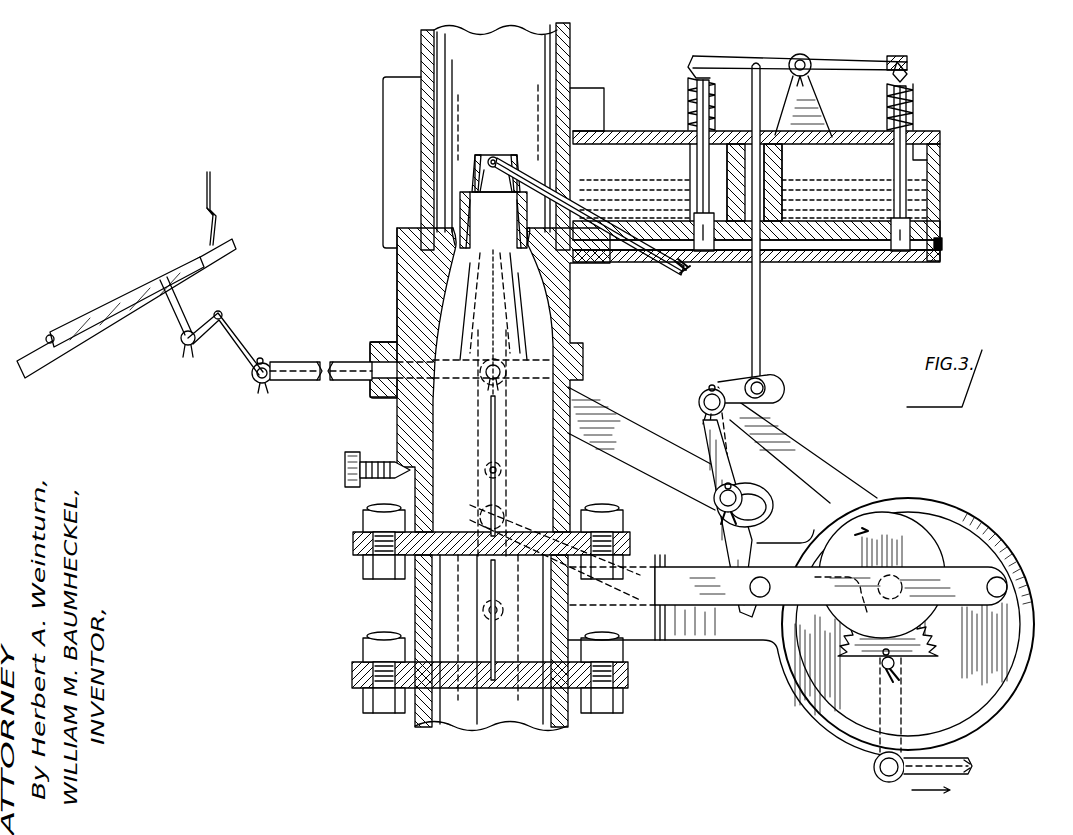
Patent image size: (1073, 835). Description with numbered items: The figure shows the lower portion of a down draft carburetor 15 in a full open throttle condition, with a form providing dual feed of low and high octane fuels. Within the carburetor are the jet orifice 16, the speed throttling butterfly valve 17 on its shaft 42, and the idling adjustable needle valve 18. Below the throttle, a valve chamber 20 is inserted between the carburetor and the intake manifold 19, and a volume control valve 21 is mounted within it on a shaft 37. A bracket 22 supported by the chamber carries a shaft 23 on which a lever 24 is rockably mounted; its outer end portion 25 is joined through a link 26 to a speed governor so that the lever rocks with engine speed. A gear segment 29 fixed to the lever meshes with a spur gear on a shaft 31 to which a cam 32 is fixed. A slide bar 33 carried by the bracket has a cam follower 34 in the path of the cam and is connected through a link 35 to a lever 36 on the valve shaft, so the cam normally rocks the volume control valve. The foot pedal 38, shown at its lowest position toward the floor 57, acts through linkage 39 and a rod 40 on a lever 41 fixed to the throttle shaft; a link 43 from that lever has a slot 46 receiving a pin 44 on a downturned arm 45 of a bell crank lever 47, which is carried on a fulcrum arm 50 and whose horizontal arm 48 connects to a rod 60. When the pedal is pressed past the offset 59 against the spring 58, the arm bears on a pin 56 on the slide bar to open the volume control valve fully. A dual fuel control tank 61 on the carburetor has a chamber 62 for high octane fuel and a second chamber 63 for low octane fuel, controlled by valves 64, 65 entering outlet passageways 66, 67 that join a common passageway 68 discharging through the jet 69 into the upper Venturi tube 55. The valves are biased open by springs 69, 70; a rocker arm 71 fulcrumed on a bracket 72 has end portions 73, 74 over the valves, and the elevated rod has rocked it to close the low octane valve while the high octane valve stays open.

The down draft carburetor 15 is at (575, 70).
The jet orifice 16 is at (494, 160).
The butterfly valve 17 is at (496, 490).
The adjustable needle valve 18 is at (344, 466).
The intake manifold 19 is at (470, 720).
The valve chamber 20 is at (446, 590).
The volume control valve 21 is at (498, 668).
The bracket 22 is at (680, 632).
The shaft 23 is at (898, 668).
The lever 24 is at (880, 750).
The outer end portion 25 is at (880, 778).
The link 26 is at (966, 752).
The gear segment 29 is at (920, 648).
The shaft 31 is at (880, 596).
The cam 32 is at (908, 609).
The slide bar 33 is at (690, 568).
The cam follower 34 is at (1010, 583).
The link 35 is at (575, 500).
The lever 36 is at (488, 533).
The shaft 37 is at (490, 618).
The foot pedal 38 is at (150, 278).
The linkage 39 is at (225, 327).
The rod 40 is at (335, 362).
The lever 41 is at (486, 408).
The shaft 42 is at (486, 470).
The link 43 is at (588, 410).
The pin 44 is at (738, 494).
The arm 45 is at (703, 435).
The slot 46 is at (760, 508).
The bell crank lever 47 is at (728, 392).
The horizontal arm 48 is at (776, 390).
The fulcrum arm 50 is at (820, 470).
The upper Venturi tube 55 is at (491, 157).
The pin 56 is at (768, 578).
The floor 57 is at (125, 300).
The spring 58 is at (213, 190).
The offset 59 is at (208, 210).
The rod 60 is at (760, 316).
The dual fuel control tank 61 is at (942, 190).
The chamber 62 is at (625, 158).
The second chamber 63 is at (838, 150).
The valve 64 is at (697, 172).
The valve 65 is at (894, 162).
The outlet passageway 66 is at (705, 240).
The outlet passageway 67 is at (905, 240).
The common passageway 68 is at (838, 260).
The jet 69 is at (528, 160).
The spring 70 is at (914, 98).
The rocker arm 71 is at (858, 65).
The bracket 72 is at (803, 60).
The end portion 73 is at (697, 62).
The end portion 74 is at (898, 65).